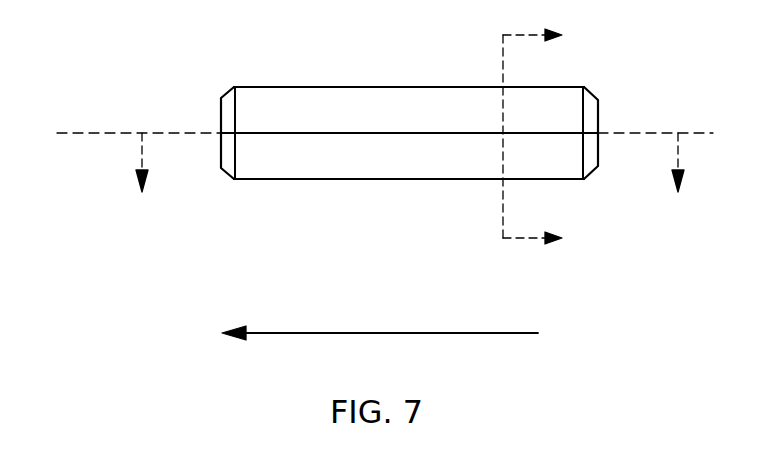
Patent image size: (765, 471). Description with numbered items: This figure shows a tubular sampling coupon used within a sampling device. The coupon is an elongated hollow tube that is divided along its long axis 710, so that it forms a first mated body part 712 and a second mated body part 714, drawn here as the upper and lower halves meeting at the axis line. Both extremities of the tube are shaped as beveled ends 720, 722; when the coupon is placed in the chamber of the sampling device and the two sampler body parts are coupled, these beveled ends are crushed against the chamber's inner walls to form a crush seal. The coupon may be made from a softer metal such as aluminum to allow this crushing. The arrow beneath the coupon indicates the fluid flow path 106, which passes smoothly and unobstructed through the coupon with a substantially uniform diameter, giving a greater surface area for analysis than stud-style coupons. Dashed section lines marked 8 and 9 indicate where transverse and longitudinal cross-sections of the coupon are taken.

The long axis 710 is at (80, 132).
The first mated body part 712 is at (352, 86).
The second mated body part 714 is at (445, 182).
The beveled end 720 is at (222, 88).
The beveled end 722 is at (592, 95).
The fluid flow path 106 is at (345, 333).
The section line 8- 8 is at (409, 179).
The section line 9- 9 is at (543, 138).